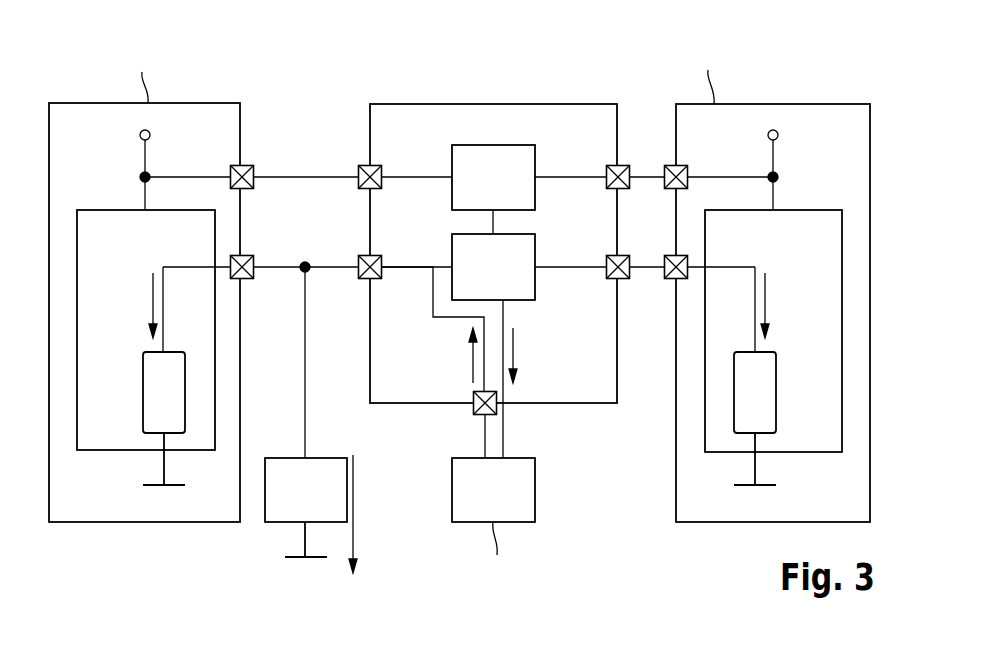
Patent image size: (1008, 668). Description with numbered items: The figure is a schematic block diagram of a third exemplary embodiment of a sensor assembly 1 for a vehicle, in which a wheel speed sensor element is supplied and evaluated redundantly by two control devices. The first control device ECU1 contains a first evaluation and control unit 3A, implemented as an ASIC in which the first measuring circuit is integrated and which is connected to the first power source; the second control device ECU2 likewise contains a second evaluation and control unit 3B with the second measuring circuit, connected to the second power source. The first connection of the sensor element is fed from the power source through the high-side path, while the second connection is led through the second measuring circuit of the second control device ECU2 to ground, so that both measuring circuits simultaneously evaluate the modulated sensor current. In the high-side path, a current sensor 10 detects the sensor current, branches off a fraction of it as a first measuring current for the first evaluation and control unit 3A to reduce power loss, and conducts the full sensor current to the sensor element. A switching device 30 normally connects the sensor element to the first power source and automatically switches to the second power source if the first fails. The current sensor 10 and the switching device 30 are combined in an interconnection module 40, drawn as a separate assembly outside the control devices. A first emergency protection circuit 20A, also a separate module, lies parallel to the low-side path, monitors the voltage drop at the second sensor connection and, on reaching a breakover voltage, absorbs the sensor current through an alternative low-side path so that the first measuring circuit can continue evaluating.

The sensor assembly 1 is at (772, 62).
The first evaluation and control unit 3A is at (820, 210).
The second evaluation and control unit 3B is at (108, 210).
The current sensor 10 is at (535, 245).
The first emergency protection circuit 20A is at (276, 458).
The switching device 30 is at (535, 155).
The interconnection module 40 is at (393, 104).
The first control device ECU1 is at (731, 283).
The second control device ECU2 is at (144, 283).